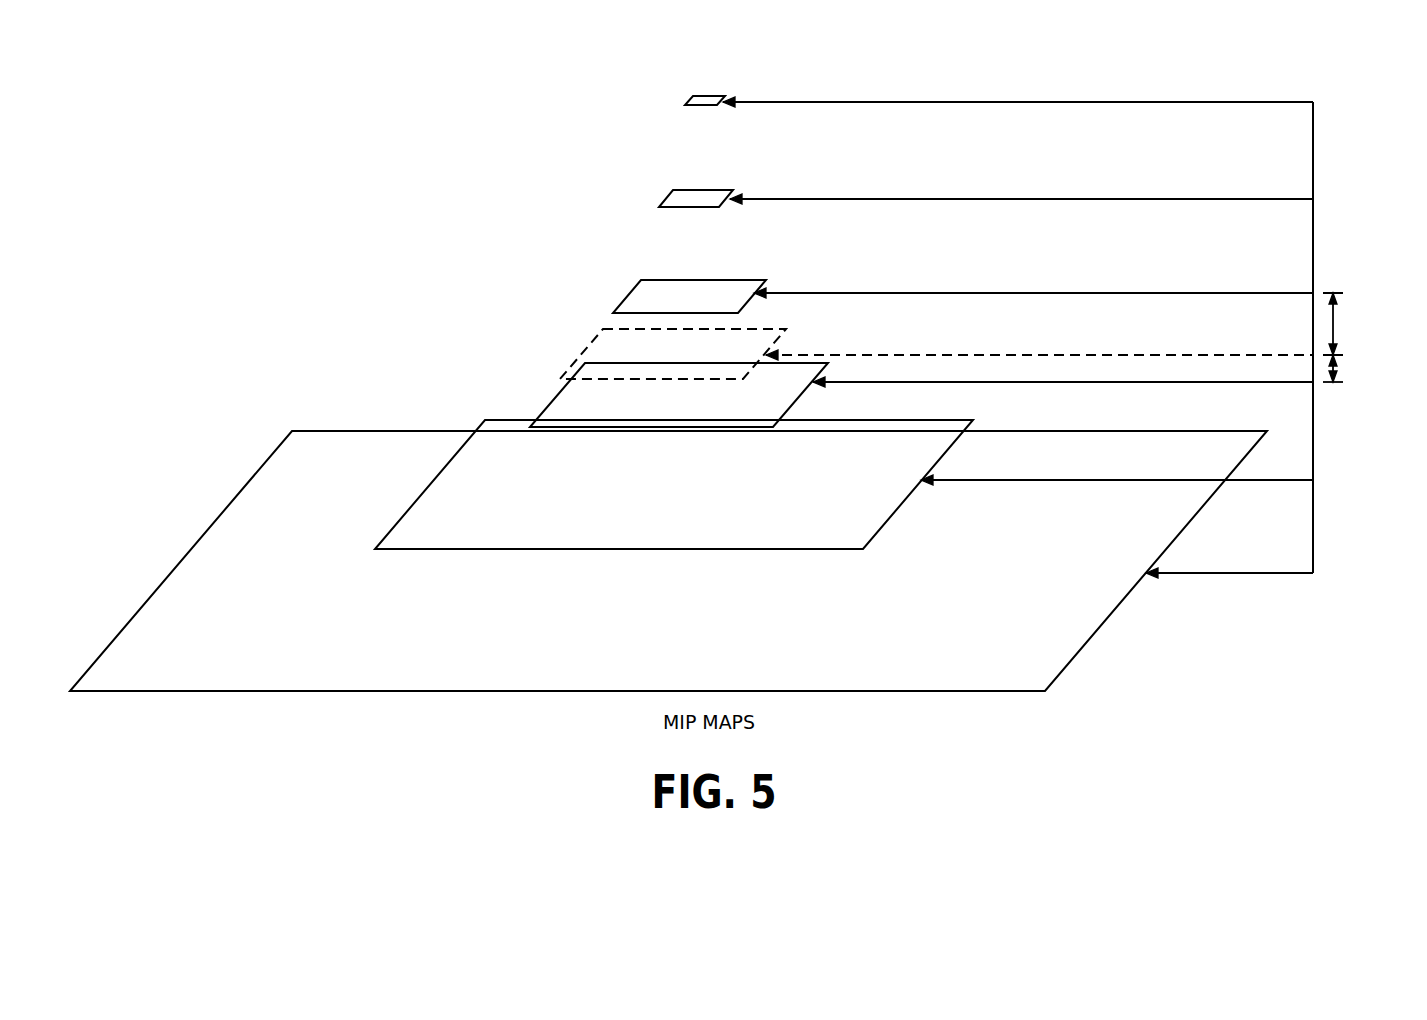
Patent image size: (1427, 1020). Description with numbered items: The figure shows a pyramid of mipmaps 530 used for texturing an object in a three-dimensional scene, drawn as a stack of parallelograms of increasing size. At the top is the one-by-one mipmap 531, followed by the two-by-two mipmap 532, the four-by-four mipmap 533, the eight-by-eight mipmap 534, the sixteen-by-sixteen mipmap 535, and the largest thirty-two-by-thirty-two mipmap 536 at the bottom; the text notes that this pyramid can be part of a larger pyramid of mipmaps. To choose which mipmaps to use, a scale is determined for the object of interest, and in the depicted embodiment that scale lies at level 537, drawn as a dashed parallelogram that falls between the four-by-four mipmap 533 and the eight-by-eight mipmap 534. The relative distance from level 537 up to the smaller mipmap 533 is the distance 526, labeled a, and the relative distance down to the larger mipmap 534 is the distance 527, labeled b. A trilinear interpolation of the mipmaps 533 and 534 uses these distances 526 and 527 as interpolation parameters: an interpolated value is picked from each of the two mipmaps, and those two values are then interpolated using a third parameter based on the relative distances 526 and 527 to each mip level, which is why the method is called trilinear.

The distance a 526 is at (1342, 310).
The distance b 527 is at (1340, 365).
The mip maps set 530 is at (352, 208).
The 1x1 mipmap 531 is at (685, 102).
The 2x2 mipmap 532 is at (660, 205).
The 4x4 mipmap 533 is at (627, 312).
The 8x8 mipmap 534 is at (657, 427).
The 16x16 mipmap 535 is at (475, 421).
The largest mip map level 536 is at (278, 447).
The level 537 is at (585, 353).